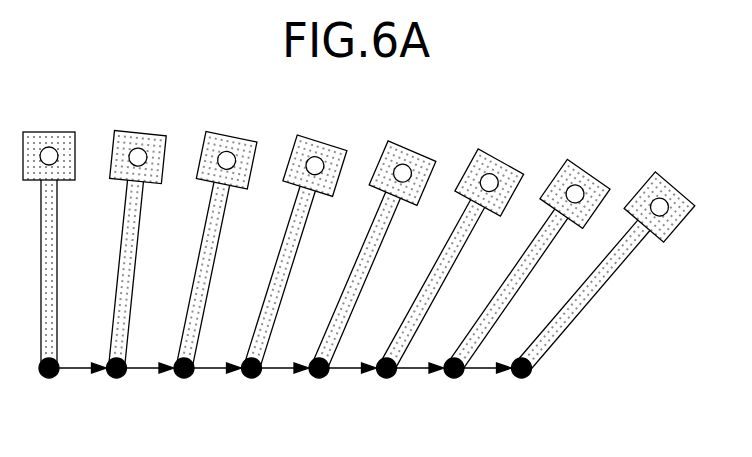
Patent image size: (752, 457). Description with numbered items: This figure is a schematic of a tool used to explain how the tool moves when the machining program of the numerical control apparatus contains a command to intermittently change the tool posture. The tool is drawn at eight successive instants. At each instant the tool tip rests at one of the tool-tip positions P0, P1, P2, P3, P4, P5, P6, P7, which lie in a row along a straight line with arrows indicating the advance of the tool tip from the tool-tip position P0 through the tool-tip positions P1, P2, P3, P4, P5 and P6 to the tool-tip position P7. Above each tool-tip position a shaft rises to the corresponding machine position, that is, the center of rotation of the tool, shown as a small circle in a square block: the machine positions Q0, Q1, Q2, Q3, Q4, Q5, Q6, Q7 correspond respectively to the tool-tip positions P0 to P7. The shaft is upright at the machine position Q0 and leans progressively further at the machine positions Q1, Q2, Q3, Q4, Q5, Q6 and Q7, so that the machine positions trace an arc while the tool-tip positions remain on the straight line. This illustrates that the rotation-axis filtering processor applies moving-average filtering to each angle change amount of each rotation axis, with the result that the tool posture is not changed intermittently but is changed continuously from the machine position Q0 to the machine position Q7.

The machine position Q0 is at (49, 147).
The machine position Q1 is at (138, 148).
The machine position Q2 is at (227, 151).
The machine position Q3 is at (315, 157).
The machine position Q4 is at (402, 164).
The machine position Q5 is at (489, 174).
The machine position Q6 is at (575, 185).
The machine position Q7 is at (660, 198).
The tool-tip position P0 is at (49, 378).
The tool-tip position P1 is at (116, 378).
The tool-tip position P2 is at (184, 378).
The tool-tip position P3 is at (252, 378).
The tool-tip position P4 is at (319, 378).
The tool-tip position P5 is at (386, 378).
The tool-tip position P6 is at (454, 378).
The tool-tip position P7 is at (522, 378).